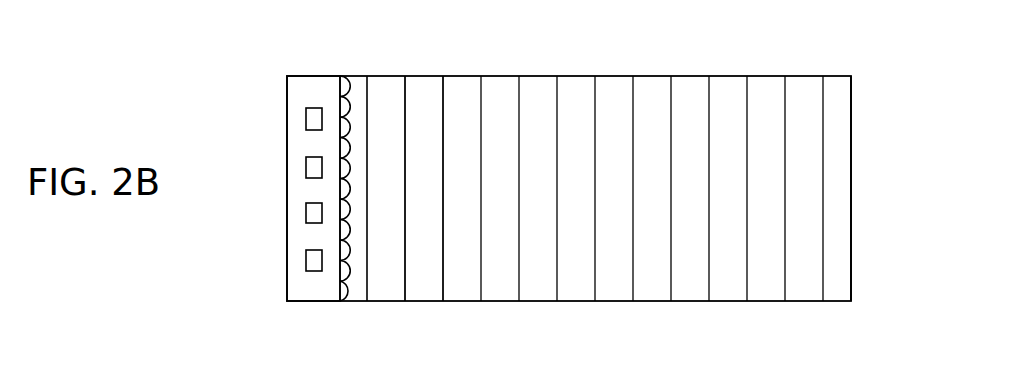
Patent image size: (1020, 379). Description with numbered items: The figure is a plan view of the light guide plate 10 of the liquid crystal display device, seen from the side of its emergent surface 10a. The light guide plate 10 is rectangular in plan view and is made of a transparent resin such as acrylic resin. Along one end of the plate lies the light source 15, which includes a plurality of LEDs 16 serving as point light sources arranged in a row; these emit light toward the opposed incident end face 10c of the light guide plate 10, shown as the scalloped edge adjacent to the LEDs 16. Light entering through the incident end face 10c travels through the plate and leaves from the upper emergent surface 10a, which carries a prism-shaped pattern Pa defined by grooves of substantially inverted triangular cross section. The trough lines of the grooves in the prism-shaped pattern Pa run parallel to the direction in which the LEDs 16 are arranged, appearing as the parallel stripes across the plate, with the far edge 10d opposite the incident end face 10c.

The light guide plate 10 is at (652, 76).
The upper surface (emergent surface) 10a is at (576, 130).
The end face (incident end face) 10c is at (340, 275).
The trailing edge 10d is at (851, 172).
The light source 15 is at (292, 76).
The LEDs 16 is at (306, 112).
The prism-shaped pattern Pa is at (442, 152).